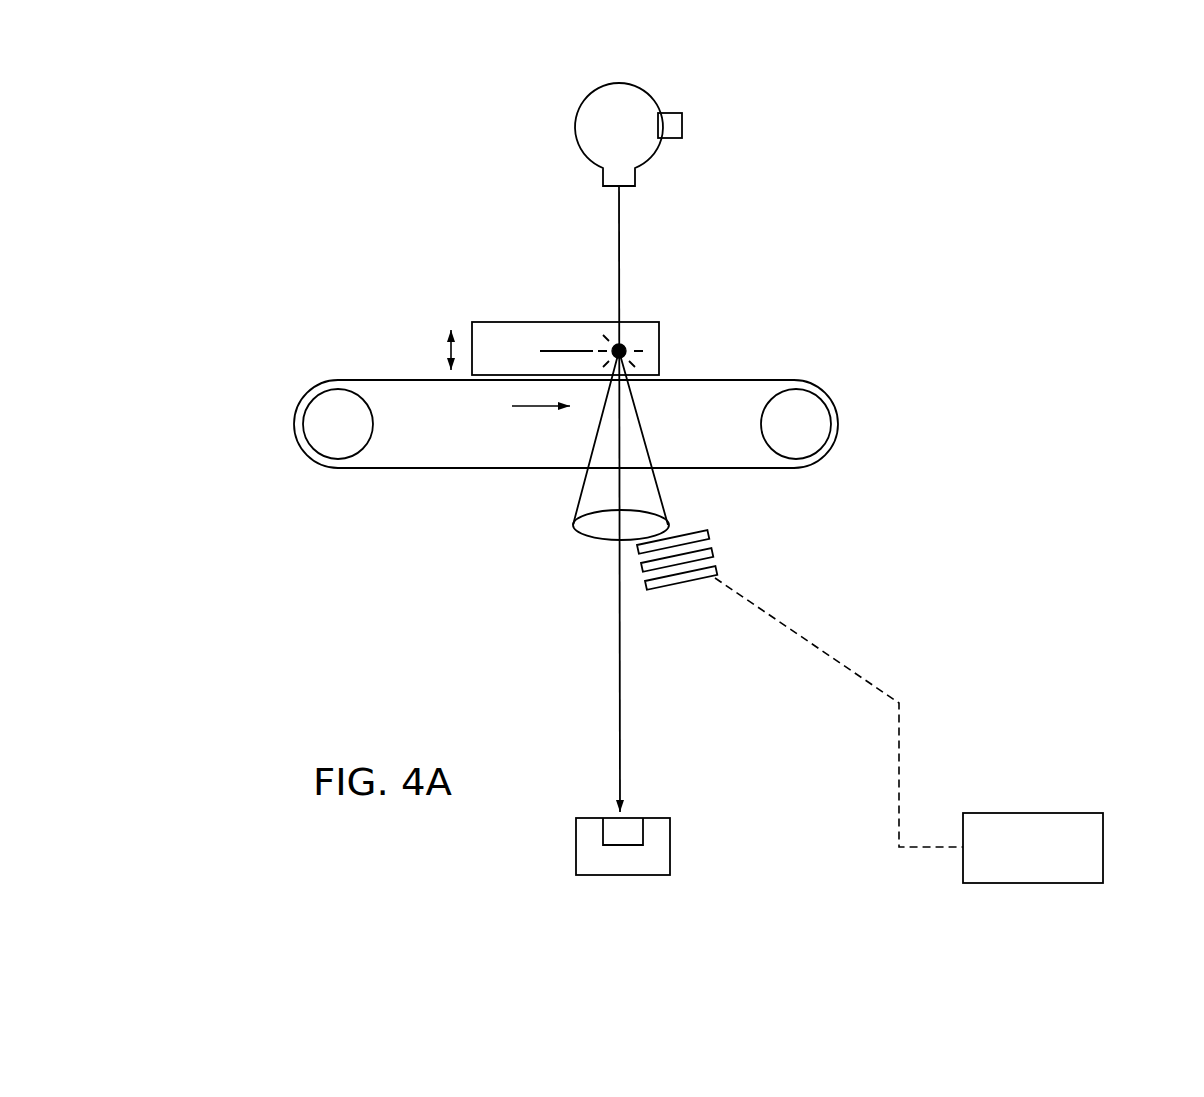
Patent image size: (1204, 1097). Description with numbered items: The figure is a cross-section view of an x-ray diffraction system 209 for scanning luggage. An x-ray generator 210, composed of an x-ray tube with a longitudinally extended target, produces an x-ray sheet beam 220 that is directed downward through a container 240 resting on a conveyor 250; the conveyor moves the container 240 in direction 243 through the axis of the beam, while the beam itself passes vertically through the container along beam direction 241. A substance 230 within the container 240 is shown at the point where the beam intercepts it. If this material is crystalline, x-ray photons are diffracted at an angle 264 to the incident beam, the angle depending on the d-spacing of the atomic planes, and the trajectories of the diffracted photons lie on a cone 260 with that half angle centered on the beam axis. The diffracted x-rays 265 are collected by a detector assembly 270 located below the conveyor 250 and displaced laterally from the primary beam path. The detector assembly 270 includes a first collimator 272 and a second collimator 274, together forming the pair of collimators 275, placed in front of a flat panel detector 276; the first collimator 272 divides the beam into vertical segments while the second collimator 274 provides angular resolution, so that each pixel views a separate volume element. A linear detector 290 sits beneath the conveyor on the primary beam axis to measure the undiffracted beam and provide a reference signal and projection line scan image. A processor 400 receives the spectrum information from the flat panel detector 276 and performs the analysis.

The x-ray diffraction system 209 is at (847, 82).
The x-ray generator 210 is at (563, 124).
The x-ray sheet beam 220 is at (605, 252).
The substance 230 is at (630, 340).
The container 240 is at (672, 343).
The beam direction 241 is at (449, 350).
The direction 243 is at (530, 406).
The conveyor 250 is at (845, 407).
The cone 260 is at (675, 512).
The angle 264 is at (645, 445).
The diffracted x-rays 265 is at (572, 483).
The detector assembly 270 is at (676, 634).
The first collimator 272 is at (722, 536).
The second collimator 274 is at (722, 553).
The pair of collimators 275 is at (1113, 537).
The flat panel detector 276 is at (687, 589).
The linear detector 290 is at (670, 848).
The processor 400 is at (1054, 860).